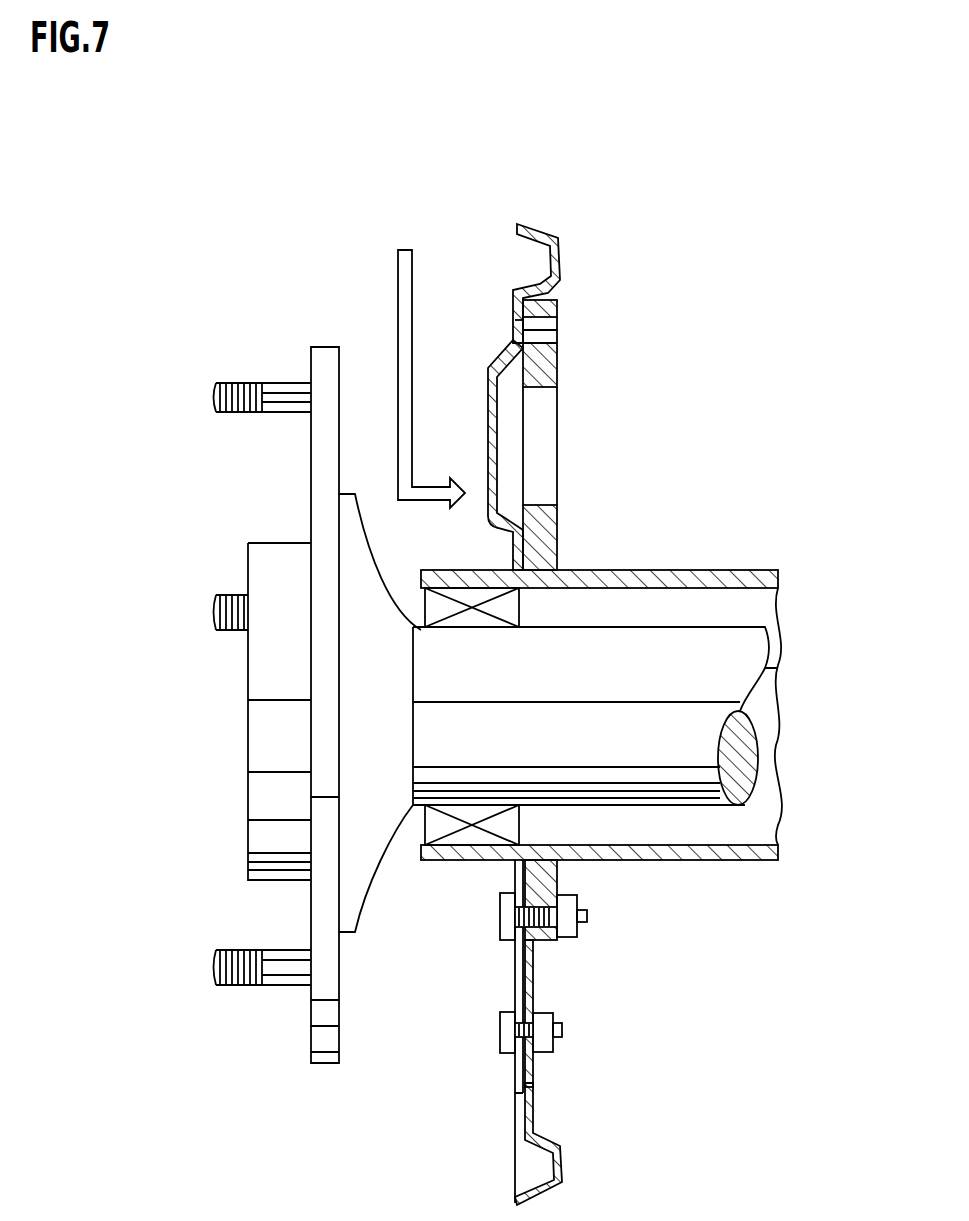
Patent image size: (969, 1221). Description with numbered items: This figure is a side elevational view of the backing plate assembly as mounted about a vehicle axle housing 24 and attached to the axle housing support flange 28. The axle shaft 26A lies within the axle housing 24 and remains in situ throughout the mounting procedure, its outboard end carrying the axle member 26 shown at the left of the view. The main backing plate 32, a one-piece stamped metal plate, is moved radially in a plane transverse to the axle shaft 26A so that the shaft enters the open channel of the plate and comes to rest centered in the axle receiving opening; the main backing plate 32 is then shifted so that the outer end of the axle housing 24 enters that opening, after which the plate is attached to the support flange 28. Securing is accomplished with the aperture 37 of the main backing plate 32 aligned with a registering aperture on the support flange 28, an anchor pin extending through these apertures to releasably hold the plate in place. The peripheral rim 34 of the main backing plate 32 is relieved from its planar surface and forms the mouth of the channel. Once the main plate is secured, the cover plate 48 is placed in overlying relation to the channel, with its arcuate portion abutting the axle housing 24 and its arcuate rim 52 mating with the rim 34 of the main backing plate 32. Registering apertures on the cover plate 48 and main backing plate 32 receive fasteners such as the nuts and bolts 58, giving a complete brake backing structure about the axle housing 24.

The axle housing 24 is at (608, 572).
The hub 26 is at (311, 1018).
The axle shaft 26A is at (645, 645).
The axle housing support flange 28 is at (560, 377).
The main backing plate 32 is at (490, 372).
The peripheral rim 34 is at (562, 272).
The aperture 37 is at (513, 325).
The cover plate 48 is at (538, 988).
The arcuate rim 52 is at (562, 1162).
The bolt 58 is at (562, 1030).